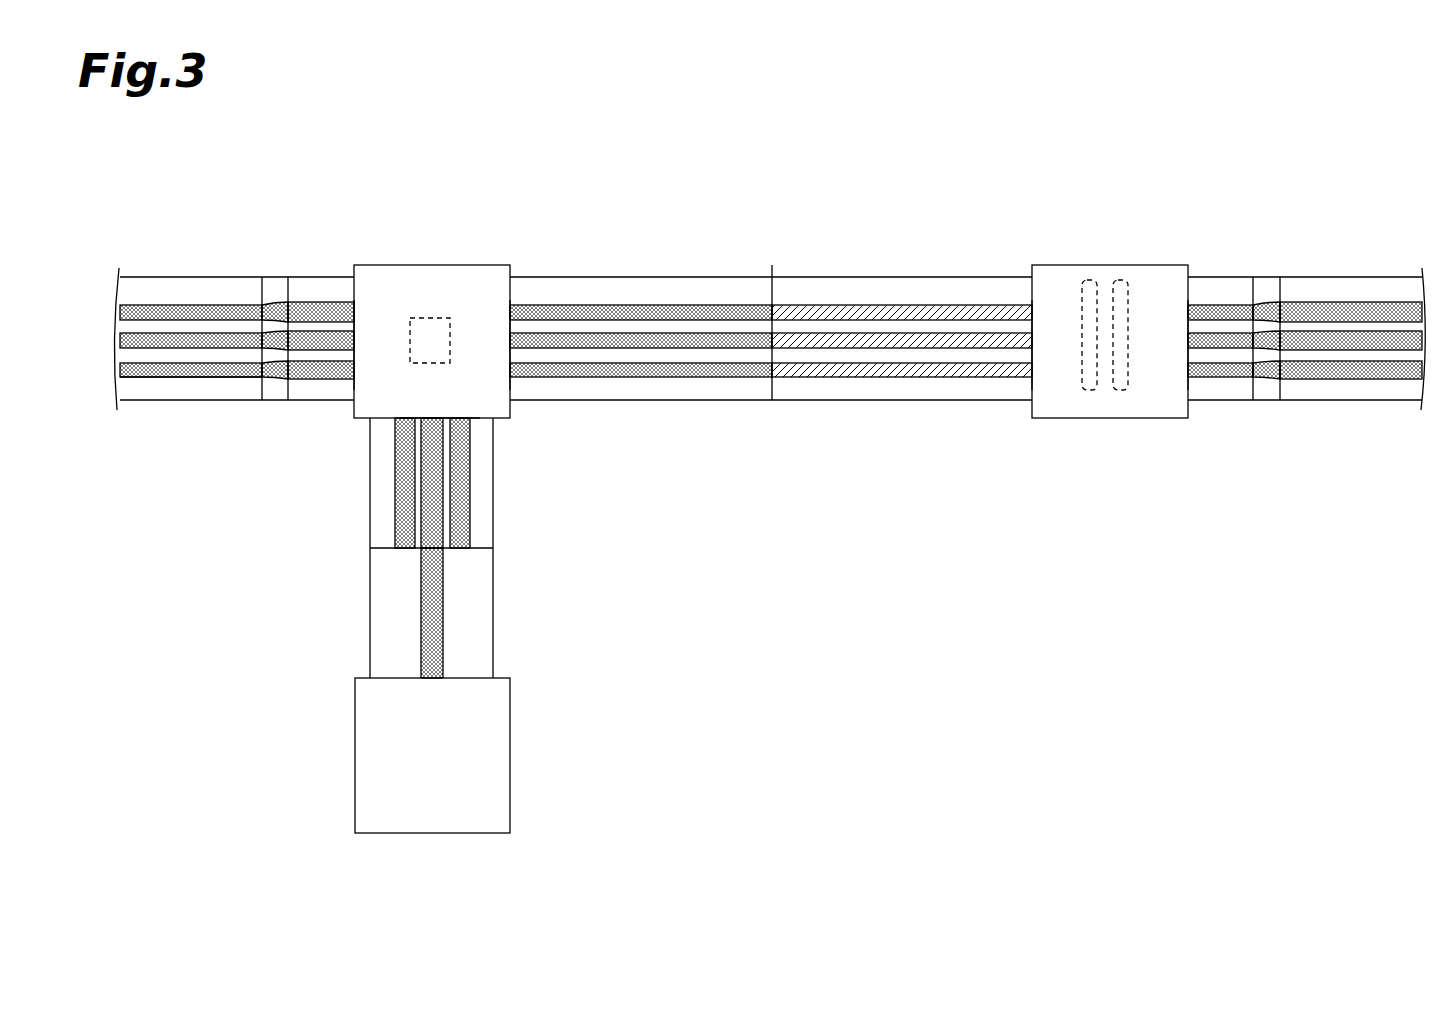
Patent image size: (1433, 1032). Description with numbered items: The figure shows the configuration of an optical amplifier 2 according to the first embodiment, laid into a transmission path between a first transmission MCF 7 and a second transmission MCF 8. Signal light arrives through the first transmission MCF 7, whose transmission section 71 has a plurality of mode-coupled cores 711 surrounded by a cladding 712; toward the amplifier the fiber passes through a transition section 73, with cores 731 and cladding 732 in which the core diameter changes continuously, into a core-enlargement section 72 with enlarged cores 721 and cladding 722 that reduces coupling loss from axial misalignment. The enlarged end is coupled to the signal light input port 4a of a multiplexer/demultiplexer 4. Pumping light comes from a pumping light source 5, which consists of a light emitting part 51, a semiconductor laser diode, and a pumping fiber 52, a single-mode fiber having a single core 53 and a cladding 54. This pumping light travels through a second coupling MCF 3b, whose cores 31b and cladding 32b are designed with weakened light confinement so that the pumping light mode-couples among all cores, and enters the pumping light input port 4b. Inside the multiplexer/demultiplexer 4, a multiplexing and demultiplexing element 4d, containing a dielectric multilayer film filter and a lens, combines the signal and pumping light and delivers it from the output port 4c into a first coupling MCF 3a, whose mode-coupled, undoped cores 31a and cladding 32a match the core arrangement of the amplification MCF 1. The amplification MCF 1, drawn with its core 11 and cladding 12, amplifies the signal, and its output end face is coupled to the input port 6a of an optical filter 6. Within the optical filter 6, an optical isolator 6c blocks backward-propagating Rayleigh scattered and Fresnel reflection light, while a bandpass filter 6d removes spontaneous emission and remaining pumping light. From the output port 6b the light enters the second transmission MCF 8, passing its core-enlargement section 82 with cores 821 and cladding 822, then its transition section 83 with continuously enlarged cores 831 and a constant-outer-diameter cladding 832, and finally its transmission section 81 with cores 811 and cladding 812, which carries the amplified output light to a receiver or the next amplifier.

The amplification MCF 1 is at (902, 339).
The core 11 is at (802, 383).
The cladding 12 is at (892, 402).
The optical amplifier 2 is at (355, 856).
The first coupling MCF 3a is at (641, 339).
The second coupling MCF 3b is at (426, 486).
The cores 31a is at (587, 382).
The cladding 32a is at (673, 402).
The cores 31b is at (395, 508).
The cladding 32b is at (372, 540).
The multiplexer/demultiplexer 4 is at (432, 311).
The signal light input port 4a is at (355, 369).
The pumping light input port 4b is at (460, 418).
The output port 4c is at (510, 317).
The multiplexing and demultiplexing element 4d is at (422, 318).
The pumping light source 5 is at (452, 690).
The light emitting part 51 is at (462, 755).
The pumping fiber 52 is at (434, 613).
The single core 53 is at (421, 620).
The cladding 54 is at (372, 655).
The optical filter 6 is at (1110, 334).
The input port 6a is at (1033, 372).
The output port 6b is at (1187, 372).
The optical isolator 6c is at (1088, 270).
The bandpass filter 6d is at (1123, 270).
The first transmission MCF 7 is at (235, 328).
The transmission section 71 is at (191, 346).
The cores 711 is at (202, 378).
The cladding 712 is at (153, 402).
The core-enlargement section 72 is at (318, 346).
The cores 721 is at (340, 380).
The cladding 722 is at (313, 403).
The transition section 73 is at (253, 346).
The cores 731 is at (282, 380).
The cladding 732 is at (265, 403).
The second transmission MCF 8 is at (1302, 328).
The transmission section 81 is at (1352, 346).
The cores 811 is at (1350, 380).
The cladding 812 is at (1395, 402).
The core-enlargement section 82 is at (1218, 346).
The cores 821 is at (1201, 382).
The cladding 822 is at (1228, 402).
The transition section 83 is at (1289, 346).
The cores 831 is at (1263, 380).
The cladding 832 is at (1278, 402).